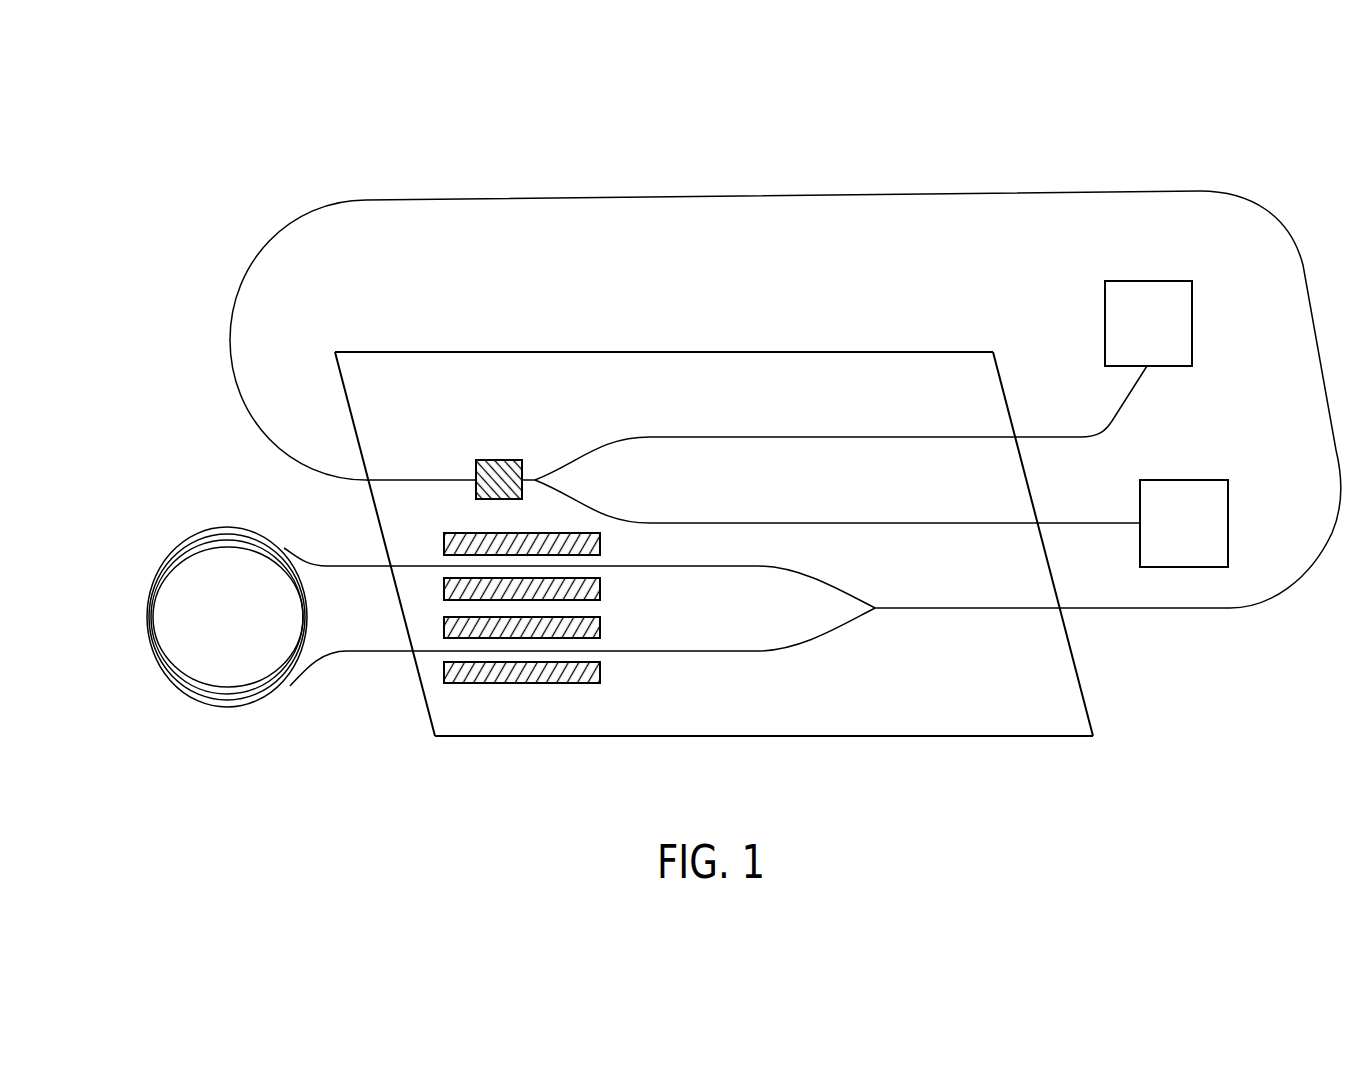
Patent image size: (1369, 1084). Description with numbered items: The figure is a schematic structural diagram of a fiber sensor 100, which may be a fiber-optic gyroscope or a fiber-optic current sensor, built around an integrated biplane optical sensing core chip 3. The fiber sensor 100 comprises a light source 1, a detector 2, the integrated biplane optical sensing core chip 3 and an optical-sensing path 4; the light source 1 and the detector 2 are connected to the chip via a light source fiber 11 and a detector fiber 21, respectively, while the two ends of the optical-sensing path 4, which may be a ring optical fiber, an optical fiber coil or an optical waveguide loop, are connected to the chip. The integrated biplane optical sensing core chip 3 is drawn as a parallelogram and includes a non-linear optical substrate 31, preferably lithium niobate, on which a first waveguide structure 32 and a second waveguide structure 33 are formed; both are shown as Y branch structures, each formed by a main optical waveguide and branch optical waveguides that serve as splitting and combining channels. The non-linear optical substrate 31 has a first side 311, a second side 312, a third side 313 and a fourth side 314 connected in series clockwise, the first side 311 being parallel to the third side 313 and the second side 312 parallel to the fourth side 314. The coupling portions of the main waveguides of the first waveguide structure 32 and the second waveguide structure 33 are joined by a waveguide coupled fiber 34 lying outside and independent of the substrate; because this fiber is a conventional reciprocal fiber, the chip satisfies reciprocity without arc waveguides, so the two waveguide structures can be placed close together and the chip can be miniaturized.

The fiber sensor 100 is at (301, 154).
The light source 1 is at (1177, 343).
The light source fiber 11 is at (1130, 393).
The detector 2 is at (1213, 550).
The detector fiber 21 is at (1105, 523).
The integrated biplane optical sensing core chip 3 is at (712, 547).
The non-linear optical substrate 31 is at (712, 548).
The first side 311 is at (1087, 689).
The second side 312 is at (767, 738).
The third side 313 is at (375, 522).
The fourth side 314 is at (809, 352).
The first waveguide structure 32 is at (558, 457).
The second waveguide structure 33 is at (867, 632).
The waveguide coupled fiber 34 is at (970, 191).
The optical-sensing path 4 is at (149, 637).